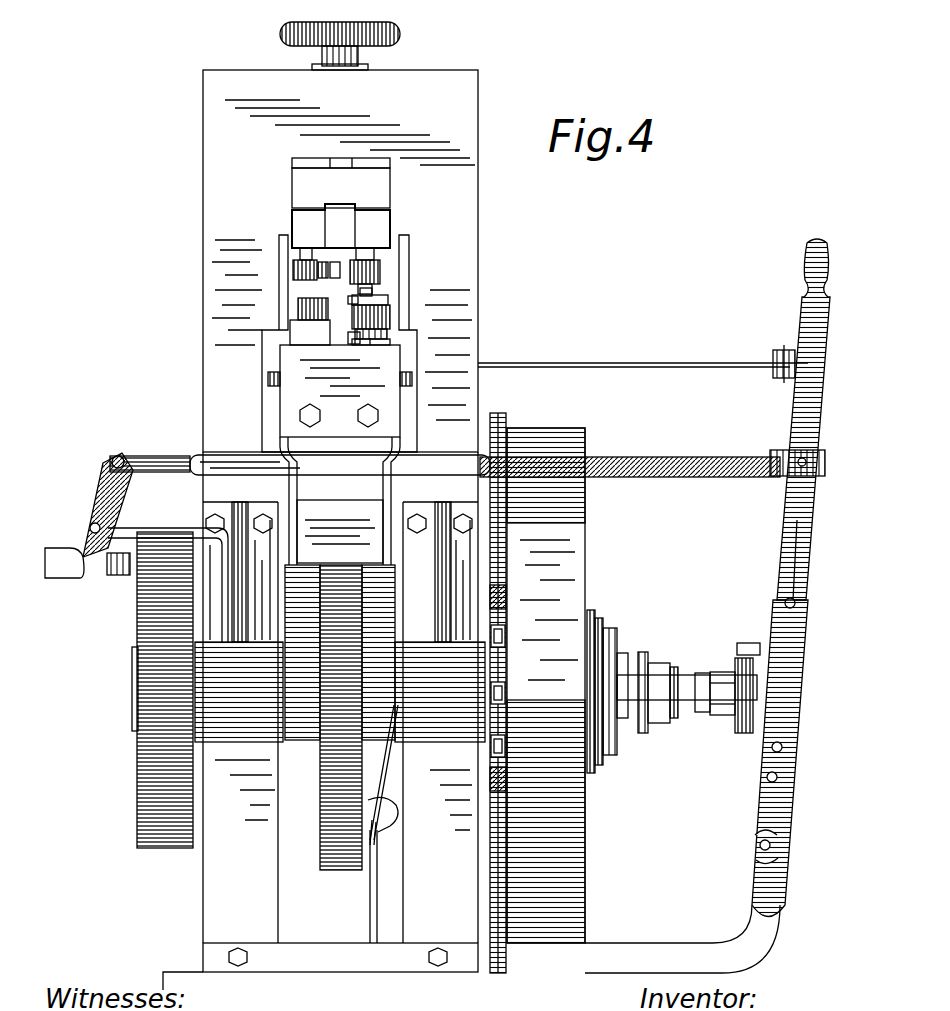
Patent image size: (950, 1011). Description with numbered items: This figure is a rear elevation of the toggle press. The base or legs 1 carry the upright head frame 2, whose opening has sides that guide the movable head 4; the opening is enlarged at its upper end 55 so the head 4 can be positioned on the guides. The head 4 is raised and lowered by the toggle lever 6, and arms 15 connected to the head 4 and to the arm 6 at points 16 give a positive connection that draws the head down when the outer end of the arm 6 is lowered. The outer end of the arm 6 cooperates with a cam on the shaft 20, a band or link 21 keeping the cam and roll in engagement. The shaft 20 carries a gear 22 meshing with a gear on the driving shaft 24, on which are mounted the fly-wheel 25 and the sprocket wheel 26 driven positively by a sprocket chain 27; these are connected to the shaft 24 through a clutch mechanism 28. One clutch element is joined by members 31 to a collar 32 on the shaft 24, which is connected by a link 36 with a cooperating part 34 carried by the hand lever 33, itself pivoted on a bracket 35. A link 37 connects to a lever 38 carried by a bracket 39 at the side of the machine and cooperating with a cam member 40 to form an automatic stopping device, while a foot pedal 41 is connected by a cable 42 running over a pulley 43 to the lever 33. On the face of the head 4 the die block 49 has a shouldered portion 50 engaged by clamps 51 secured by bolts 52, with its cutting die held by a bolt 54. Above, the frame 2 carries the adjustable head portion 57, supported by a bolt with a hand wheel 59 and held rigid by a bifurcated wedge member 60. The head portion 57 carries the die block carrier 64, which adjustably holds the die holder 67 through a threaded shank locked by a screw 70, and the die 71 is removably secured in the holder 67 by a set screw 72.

The base or legs 1 is at (212, 868).
The head frame 2 is at (470, 270).
The movable head 4 is at (400, 360).
The toggle lever 6 is at (358, 548).
The arms 15 is at (279, 427).
The connection points 16 is at (268, 379).
The shaft 20 is at (307, 705).
The band or link 21 is at (322, 787).
The gear 22 is at (155, 623).
The driving shaft 24 is at (680, 675).
The fly-wheel 25 is at (580, 545).
The sprocket wheel 26 is at (505, 636).
The sprocket chain 27 is at (506, 584).
The clutch mechanism 28 is at (604, 633).
The members 31 is at (674, 716).
The collar 32 is at (737, 664).
The hand lever 33 is at (797, 527).
The cooperating part 34 is at (787, 693).
The bracket 35 is at (756, 897).
The link 36 is at (745, 643).
The link 37 is at (664, 457).
The lever 38 is at (104, 490).
The bracket 39 is at (120, 528).
The cam member 40 is at (113, 562).
The foot pedal 41 is at (390, 812).
The cable 42 is at (624, 363).
The pulley 43 is at (384, 772).
The die block 49 is at (392, 312).
The shouldered portion 50 is at (348, 338).
The clamps 51 is at (356, 340).
The bolts 52 is at (372, 342).
The bolt 54 is at (372, 318).
The enlarged end of opening 55 is at (278, 278).
The adjustable head portion 57 is at (390, 192).
The hand wheel 59 is at (400, 34).
The wedge member 60 is at (390, 163).
The die block carrier 64 is at (378, 228).
The die block carrying member or holder 67 is at (358, 282).
The locking bolt or screw 70 is at (348, 246).
The die 71 is at (368, 310).
The bolt or set screw 72 is at (354, 274).